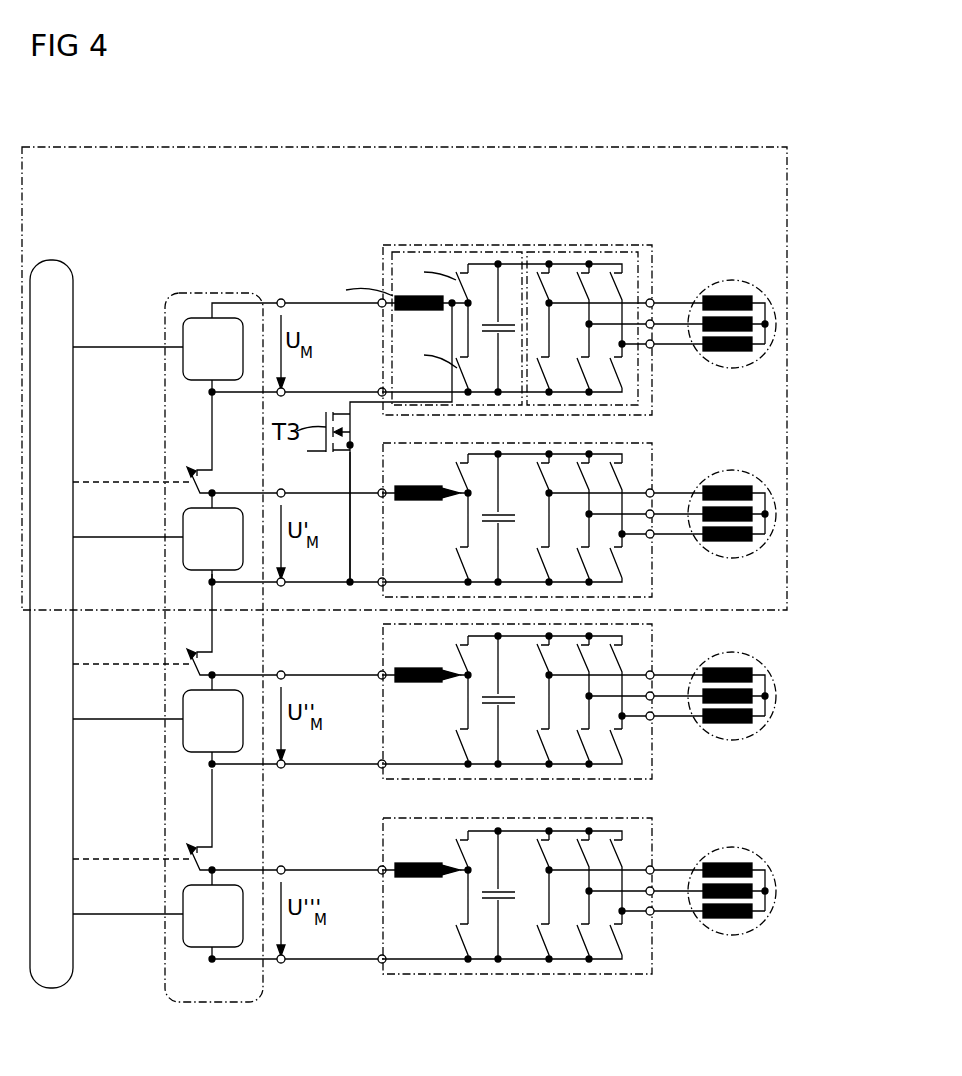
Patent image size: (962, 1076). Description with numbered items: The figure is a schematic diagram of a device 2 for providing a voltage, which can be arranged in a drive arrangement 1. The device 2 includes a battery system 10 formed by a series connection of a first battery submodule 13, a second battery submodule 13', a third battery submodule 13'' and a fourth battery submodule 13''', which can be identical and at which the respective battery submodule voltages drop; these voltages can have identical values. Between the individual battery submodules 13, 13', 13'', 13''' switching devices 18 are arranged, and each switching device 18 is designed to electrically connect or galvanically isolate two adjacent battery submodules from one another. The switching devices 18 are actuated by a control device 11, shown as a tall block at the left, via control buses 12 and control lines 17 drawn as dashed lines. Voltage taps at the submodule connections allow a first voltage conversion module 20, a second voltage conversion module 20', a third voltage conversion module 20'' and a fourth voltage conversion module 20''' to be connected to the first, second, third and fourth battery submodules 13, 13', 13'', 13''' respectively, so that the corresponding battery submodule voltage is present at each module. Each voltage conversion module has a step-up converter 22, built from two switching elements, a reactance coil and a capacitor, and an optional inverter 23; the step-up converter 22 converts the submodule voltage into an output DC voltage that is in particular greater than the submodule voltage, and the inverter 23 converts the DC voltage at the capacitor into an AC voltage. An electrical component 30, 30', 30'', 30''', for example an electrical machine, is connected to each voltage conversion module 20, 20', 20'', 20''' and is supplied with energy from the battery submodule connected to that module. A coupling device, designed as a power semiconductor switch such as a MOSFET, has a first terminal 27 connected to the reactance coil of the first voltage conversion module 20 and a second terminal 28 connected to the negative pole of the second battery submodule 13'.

The drive arrangement 1 is at (68, 128).
The device for providing a voltage 2 is at (500, 147).
The battery system 10 is at (222, 293).
The control device 11 is at (52, 260).
The control bus 12 is at (97, 346).
The first battery submodule 13 is at (271, 316).
The second battery submodule 13' is at (247, 537).
The third battery submodule 13'' is at (246, 719).
The fourth battery submodule 13''' is at (243, 914).
The switching device 17 is at (118, 482).
The voltage tap 18 is at (212, 392).
The first voltage conversion module 20 is at (490, 299).
The second voltage conversion module 20' is at (553, 520).
The third voltage conversion module 20'' is at (556, 701).
The fourth voltage conversion module 20''' is at (559, 896).
The step-up converter 22 is at (482, 252).
The inverter 23 is at (540, 252).
The first terminal 27 is at (379, 306).
The second terminal 28 is at (349, 580).
The electrical component 30 is at (715, 294).
The electrical component 30' is at (716, 483).
The electrical component 30'' is at (715, 726).
The electrical component 30''' is at (722, 864).